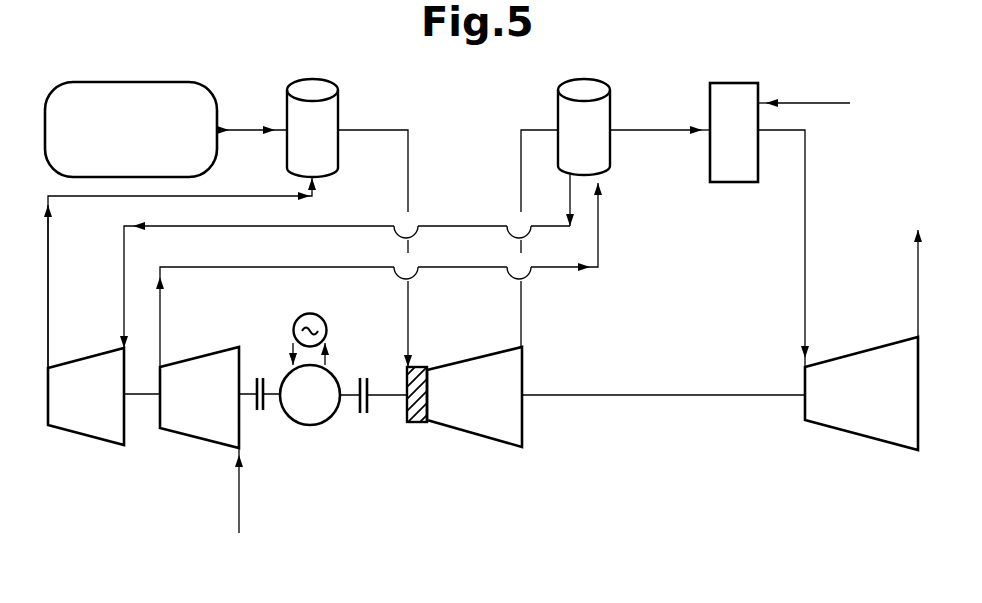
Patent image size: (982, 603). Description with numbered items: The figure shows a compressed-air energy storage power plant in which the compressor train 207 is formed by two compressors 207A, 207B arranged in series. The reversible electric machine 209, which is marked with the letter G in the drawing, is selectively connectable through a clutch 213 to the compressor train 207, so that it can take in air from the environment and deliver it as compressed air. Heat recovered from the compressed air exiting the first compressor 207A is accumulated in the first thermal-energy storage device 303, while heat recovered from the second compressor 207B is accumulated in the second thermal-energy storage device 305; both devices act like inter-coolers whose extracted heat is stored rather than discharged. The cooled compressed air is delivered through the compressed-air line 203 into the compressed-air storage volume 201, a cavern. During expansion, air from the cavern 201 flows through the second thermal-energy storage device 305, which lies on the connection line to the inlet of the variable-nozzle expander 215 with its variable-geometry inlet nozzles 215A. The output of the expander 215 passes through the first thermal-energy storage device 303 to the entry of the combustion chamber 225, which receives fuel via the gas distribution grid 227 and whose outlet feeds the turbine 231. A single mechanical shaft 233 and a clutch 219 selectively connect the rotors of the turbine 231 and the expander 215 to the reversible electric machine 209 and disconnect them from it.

The compressed-air storage volume 201 is at (137, 108).
The compressed-air line 203 is at (253, 128).
The second thermal-energy storage device 305 is at (330, 112).
The first thermal-energy storage device 303 is at (605, 115).
The combustion chamber 225 is at (718, 162).
The gas distribution grid 227 is at (788, 103).
The compressor train 207 is at (143, 453).
The first compressor 207A is at (205, 430).
The second compressor 207B is at (98, 435).
The clutch 213 is at (250, 413).
The reversible electric machine 209 is at (312, 415).
The generator / grid connection G is at (320, 312).
The clutch 219 is at (372, 385).
The variable-geometry inlet nozzles 215A is at (420, 420).
The variable-nozzle expander 215 is at (496, 424).
The mechanical shaft 233 is at (573, 408).
The turbine 231 is at (843, 420).